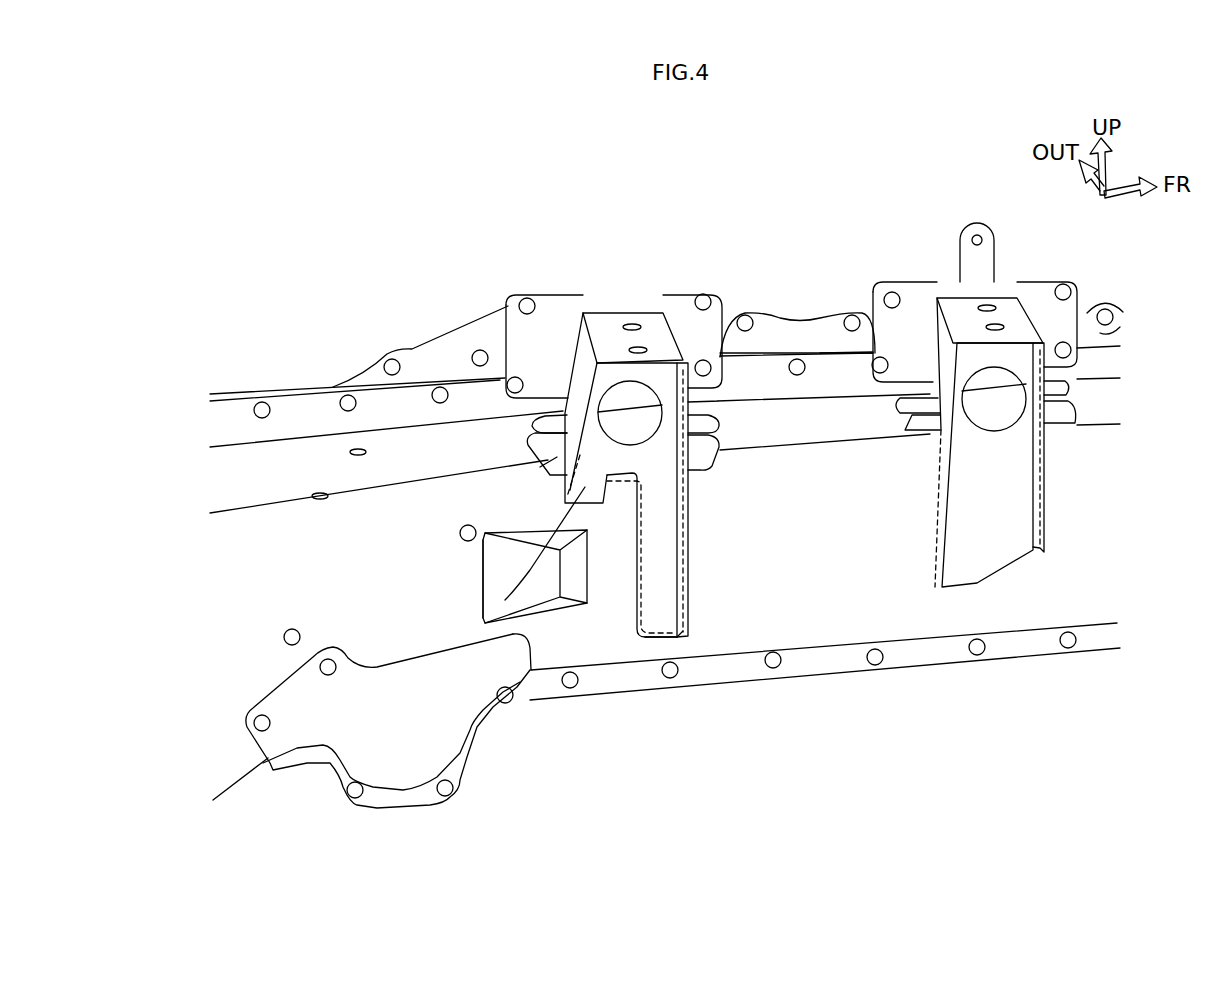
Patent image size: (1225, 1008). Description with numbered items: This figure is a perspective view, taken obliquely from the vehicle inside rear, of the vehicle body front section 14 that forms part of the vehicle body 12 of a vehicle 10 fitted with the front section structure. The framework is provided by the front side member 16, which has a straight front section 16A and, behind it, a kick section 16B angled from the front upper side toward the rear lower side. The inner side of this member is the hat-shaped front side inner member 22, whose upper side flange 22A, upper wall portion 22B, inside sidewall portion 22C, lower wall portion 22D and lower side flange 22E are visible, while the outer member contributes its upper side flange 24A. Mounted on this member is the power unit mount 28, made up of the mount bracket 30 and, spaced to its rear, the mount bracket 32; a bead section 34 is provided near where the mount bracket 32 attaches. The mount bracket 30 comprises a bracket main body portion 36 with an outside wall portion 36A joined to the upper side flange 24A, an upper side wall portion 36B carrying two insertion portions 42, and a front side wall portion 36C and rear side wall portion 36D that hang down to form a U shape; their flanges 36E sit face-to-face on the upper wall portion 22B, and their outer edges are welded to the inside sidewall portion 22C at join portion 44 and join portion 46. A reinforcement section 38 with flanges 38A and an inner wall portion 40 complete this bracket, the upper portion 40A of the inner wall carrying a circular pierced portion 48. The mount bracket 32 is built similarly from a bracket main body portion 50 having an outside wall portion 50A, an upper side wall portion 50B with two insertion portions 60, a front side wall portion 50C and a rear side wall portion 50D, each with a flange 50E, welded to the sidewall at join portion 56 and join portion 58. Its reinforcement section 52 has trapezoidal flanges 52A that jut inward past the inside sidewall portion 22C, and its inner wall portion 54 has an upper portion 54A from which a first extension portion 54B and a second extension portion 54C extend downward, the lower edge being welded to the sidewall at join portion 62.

The vehicle 10 is at (857, 160).
The vehicle body 12 is at (862, 219).
The vehicle body front section 14 is at (890, 188).
The front side member 16 is at (656, 548).
The front section 16A is at (1078, 597).
The kick section 16B is at (222, 753).
The front side inner member 22 is at (618, 544).
The upper side flange 22A is at (372, 408).
The upper wall portion 22B is at (282, 470).
The inside sidewall portion 22C is at (272, 567).
The lower wall portion 22D is at (930, 660).
The lower side flange 22E is at (597, 680).
The upper side flange 24A is at (1100, 338).
The power unit mount 28 is at (804, 203).
The mount bracket 30 is at (1024, 435).
The mount bracket 32 is at (649, 236).
The bead section 34 is at (498, 575).
The bracket main body portion 36 is at (1012, 435).
The outside wall portion 36A is at (918, 297).
The upper side wall portion 36B is at (1020, 320).
The front side wall portion 36C is at (1043, 473).
The rear side wall portion 36D is at (933, 358).
The flange 36E is at (1072, 392).
The reinforcement section 38 is at (1072, 420).
The flange 38A is at (1031, 463).
The inner wall portion 40 is at (994, 588).
The upper portion 40A is at (1013, 445).
The insertion portion 42 is at (992, 280).
The join portion 44 is at (1044, 531).
The join portion 46 is at (933, 537).
The pierced portion 48 is at (611, 418).
The bracket main body portion 50 is at (626, 403).
The outside wall portion 50A is at (665, 342).
The upper side wall portion 50B is at (712, 345).
The front side wall portion 50C is at (684, 558).
The rear side wall portion 50D is at (580, 378).
The flange 50E is at (528, 421).
The reinforcement section 52 is at (555, 457).
The flange 52A is at (530, 481).
The inner wall portion 54 is at (645, 481).
The upper portion 54A is at (720, 362).
The first extension portion 54B is at (660, 620).
The second extension portion 54C is at (486, 600).
The join portion 56 is at (684, 510).
The join portion 58 is at (563, 500).
The insertion portion 60 is at (636, 347).
The join portion 62 is at (650, 640).